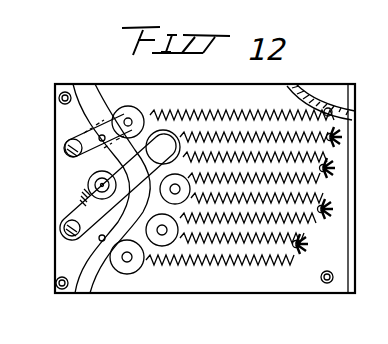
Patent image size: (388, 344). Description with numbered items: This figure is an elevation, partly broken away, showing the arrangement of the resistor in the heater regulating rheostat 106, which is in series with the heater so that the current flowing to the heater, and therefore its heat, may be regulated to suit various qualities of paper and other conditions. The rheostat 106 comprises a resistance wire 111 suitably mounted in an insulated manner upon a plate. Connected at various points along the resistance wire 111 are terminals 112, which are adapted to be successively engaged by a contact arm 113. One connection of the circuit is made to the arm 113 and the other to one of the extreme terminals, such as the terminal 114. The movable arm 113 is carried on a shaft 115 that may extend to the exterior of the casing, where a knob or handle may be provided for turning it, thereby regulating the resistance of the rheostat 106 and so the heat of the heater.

The adjusting rheostat 106 is at (205, 188).
The resistance wire 111 is at (237, 264).
The terminals 112 is at (138, 270).
The contact arm 113 is at (112, 172).
The extreme terminal 114 is at (123, 110).
The shaft 115 is at (80, 200).